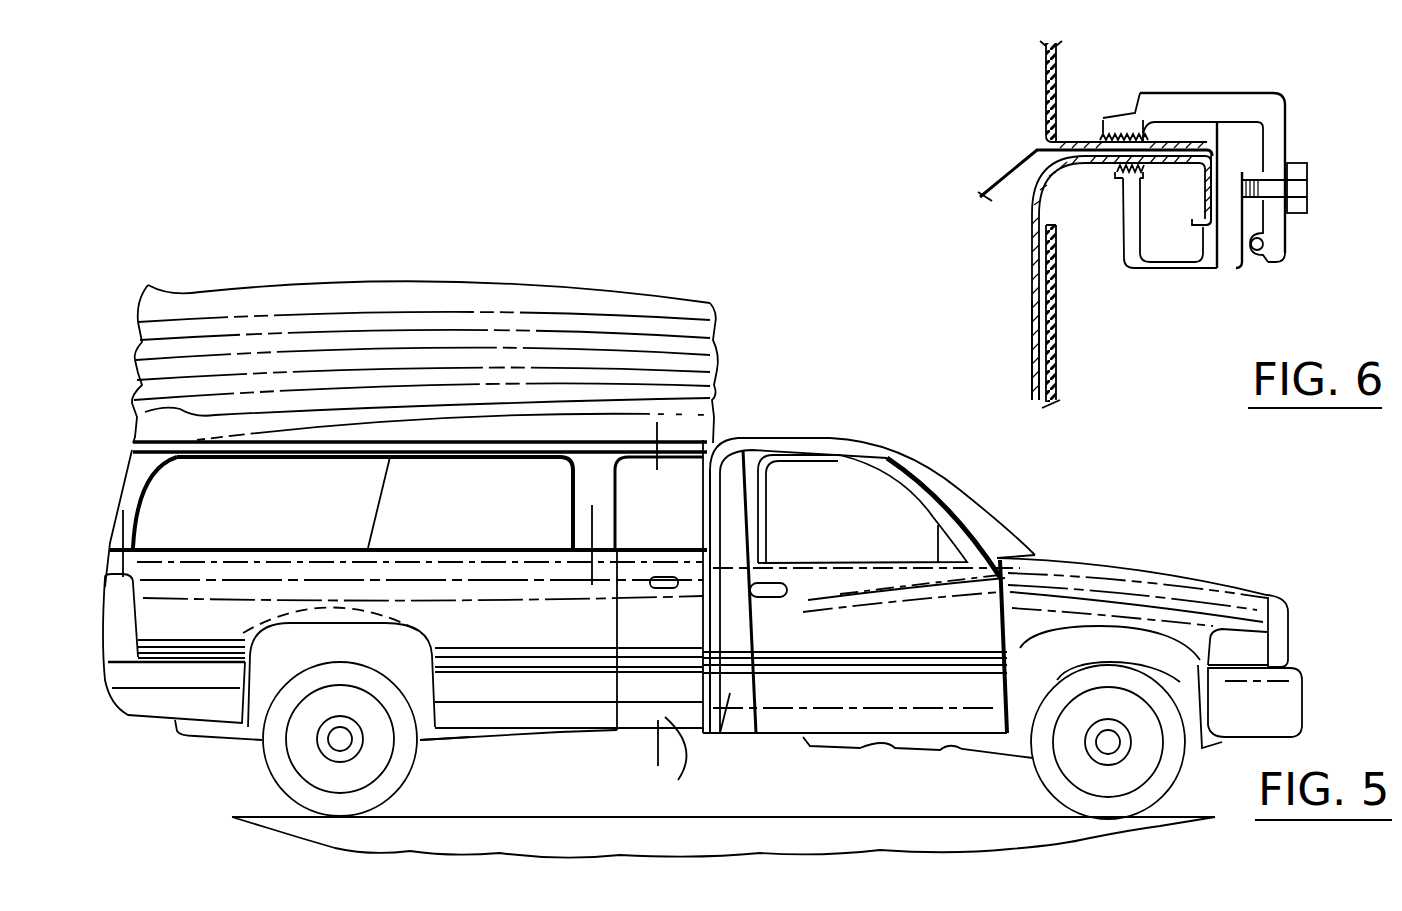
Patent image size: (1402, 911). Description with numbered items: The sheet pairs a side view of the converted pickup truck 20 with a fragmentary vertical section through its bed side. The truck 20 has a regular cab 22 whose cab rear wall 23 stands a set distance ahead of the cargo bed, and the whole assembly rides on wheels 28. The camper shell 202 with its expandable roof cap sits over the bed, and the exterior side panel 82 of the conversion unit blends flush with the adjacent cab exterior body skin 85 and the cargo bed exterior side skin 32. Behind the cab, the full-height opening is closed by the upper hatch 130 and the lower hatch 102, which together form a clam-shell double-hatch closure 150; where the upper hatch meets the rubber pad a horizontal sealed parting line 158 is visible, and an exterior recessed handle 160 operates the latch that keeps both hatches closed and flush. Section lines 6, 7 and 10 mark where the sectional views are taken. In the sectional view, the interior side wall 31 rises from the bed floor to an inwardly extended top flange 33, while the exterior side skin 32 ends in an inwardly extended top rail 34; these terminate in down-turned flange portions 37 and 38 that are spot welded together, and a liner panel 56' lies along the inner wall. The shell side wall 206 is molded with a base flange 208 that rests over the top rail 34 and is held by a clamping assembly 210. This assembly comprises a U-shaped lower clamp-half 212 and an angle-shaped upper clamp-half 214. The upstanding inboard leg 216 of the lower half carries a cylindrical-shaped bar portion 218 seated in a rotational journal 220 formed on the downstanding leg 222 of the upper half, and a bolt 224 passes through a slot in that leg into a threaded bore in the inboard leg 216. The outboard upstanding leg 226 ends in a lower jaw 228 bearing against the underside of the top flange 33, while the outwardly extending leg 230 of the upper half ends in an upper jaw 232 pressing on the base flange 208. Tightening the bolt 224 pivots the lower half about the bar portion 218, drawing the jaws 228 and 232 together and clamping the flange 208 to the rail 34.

In FIG. 5, the section line 6— 6 is at (550, 523).
In FIG. 5, the section line 7— 7 is at (152, 515).
In FIG. 5, the section line 10— 10 is at (651, 430).
In FIG. 5, the pickup truck 20 is at (1063, 540).
In FIG. 5, the regular cab 22 is at (893, 440).
In FIG. 5, the cab rear wall 23 is at (718, 465).
In FIG. 5, the wheels 28 is at (295, 777).
In FIG. 5, the exterior side skin 32 is at (563, 683).
In FIG. 6, the exterior side skin 32 is at (1010, 190).
In FIG. 5, the top rail 34 is at (440, 548).
In FIG. 6, the top rail 34 is at (1209, 118).
In FIG. 5, the exterior side panel 82 is at (672, 725).
In FIG. 5, the cab exterior body skin 85 is at (730, 692).
In FIG. 5, the lower hatch 102 is at (706, 740).
In FIG. 5, the upper hatch 130 is at (701, 448).
In FIG. 5, the clam-shell double-hatch closure 150 is at (605, 618).
In FIG. 5, the horizontal sealed parting line 158 is at (659, 586).
In FIG. 5, the exterior recessed handle 160 is at (665, 577).
In FIG. 6, the interior side wall 31 is at (1031, 312).
In FIG. 6, the top flange 33 is at (1108, 173).
In FIG. 6, the down-turned flange portion 37 is at (1203, 192).
In FIG. 6, the down-turned flange portion 38 is at (1217, 150).
In FIG. 6, the side liner 56' is at (1091, 316).
In FIG. 6, the camper shell 202 is at (1032, 53).
In FIG. 6, the shell side wall 206 is at (1056, 80).
In FIG. 6, the base flange 208 is at (1084, 146).
In FIG. 6, the clamping assembly 210 is at (1250, 78).
In FIG. 6, the lower clamp-half 212 is at (1200, 286).
In FIG. 6, the upper clamp-half 214 is at (1288, 102).
In FIG. 6, the upstanding inboard leg 216 is at (1230, 232).
In FIG. 6, the cylindrical-shaped bar portion 218 is at (1265, 252).
In FIG. 6, the rotational journal 220 is at (1250, 252).
In FIG. 6, the downstanding leg 222 is at (1277, 228).
In FIG. 6, the bolt 224 is at (1305, 175).
In FIG. 6, the outboard upstanding leg 226 is at (1128, 230).
In FIG. 6, the lower jaw 228 is at (1133, 177).
In FIG. 6, the outwardly extending leg 230 is at (1190, 104).
In FIG. 6, the upper jaw 232 is at (1134, 125).